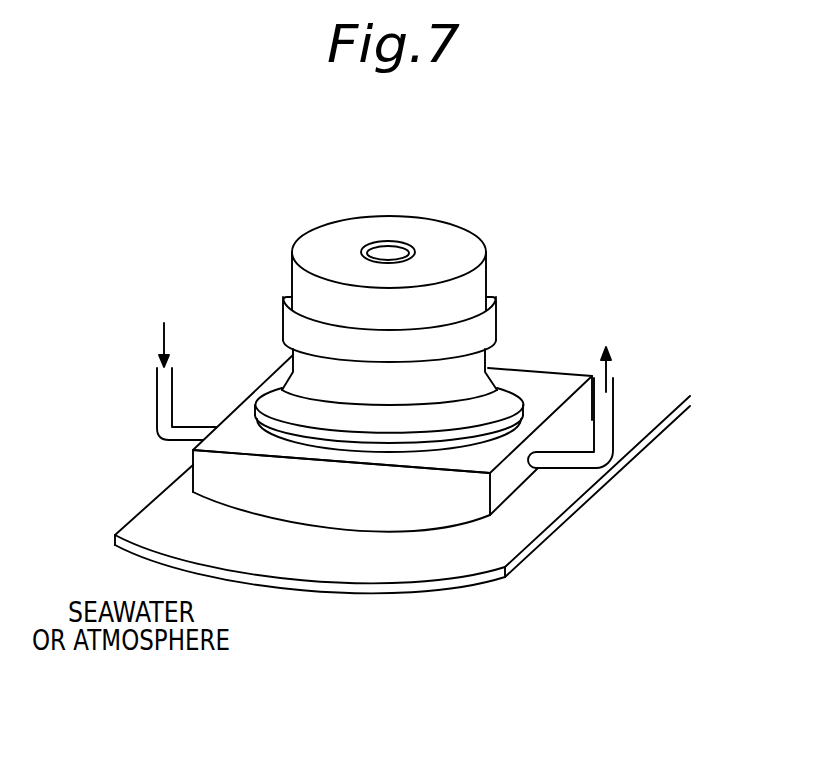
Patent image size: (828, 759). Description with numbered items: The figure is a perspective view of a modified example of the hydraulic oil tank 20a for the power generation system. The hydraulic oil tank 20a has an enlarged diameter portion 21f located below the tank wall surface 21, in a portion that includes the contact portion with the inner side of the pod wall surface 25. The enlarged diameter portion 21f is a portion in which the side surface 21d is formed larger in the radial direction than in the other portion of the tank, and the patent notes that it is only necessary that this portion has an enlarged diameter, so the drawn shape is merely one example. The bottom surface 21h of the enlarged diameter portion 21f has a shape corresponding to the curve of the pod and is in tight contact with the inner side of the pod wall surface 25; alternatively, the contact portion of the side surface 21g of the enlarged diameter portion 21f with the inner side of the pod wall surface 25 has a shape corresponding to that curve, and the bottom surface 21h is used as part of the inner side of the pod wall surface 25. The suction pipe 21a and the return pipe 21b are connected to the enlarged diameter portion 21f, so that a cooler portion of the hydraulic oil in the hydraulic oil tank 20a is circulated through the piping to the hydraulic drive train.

The hydraulic oil tank 20a is at (322, 205).
The tank wall surface 21 is at (470, 287).
The suction pipe 21a is at (607, 403).
The return pipe 21b is at (162, 397).
The side surface 21d is at (487, 360).
The enlarged diameter portion 21f is at (438, 502).
The side surface of the enlarged diameter portion 21g is at (507, 474).
The bottom surface of the enlarged diameter portion 21h is at (365, 537).
The pod wall surface 25 is at (308, 565).